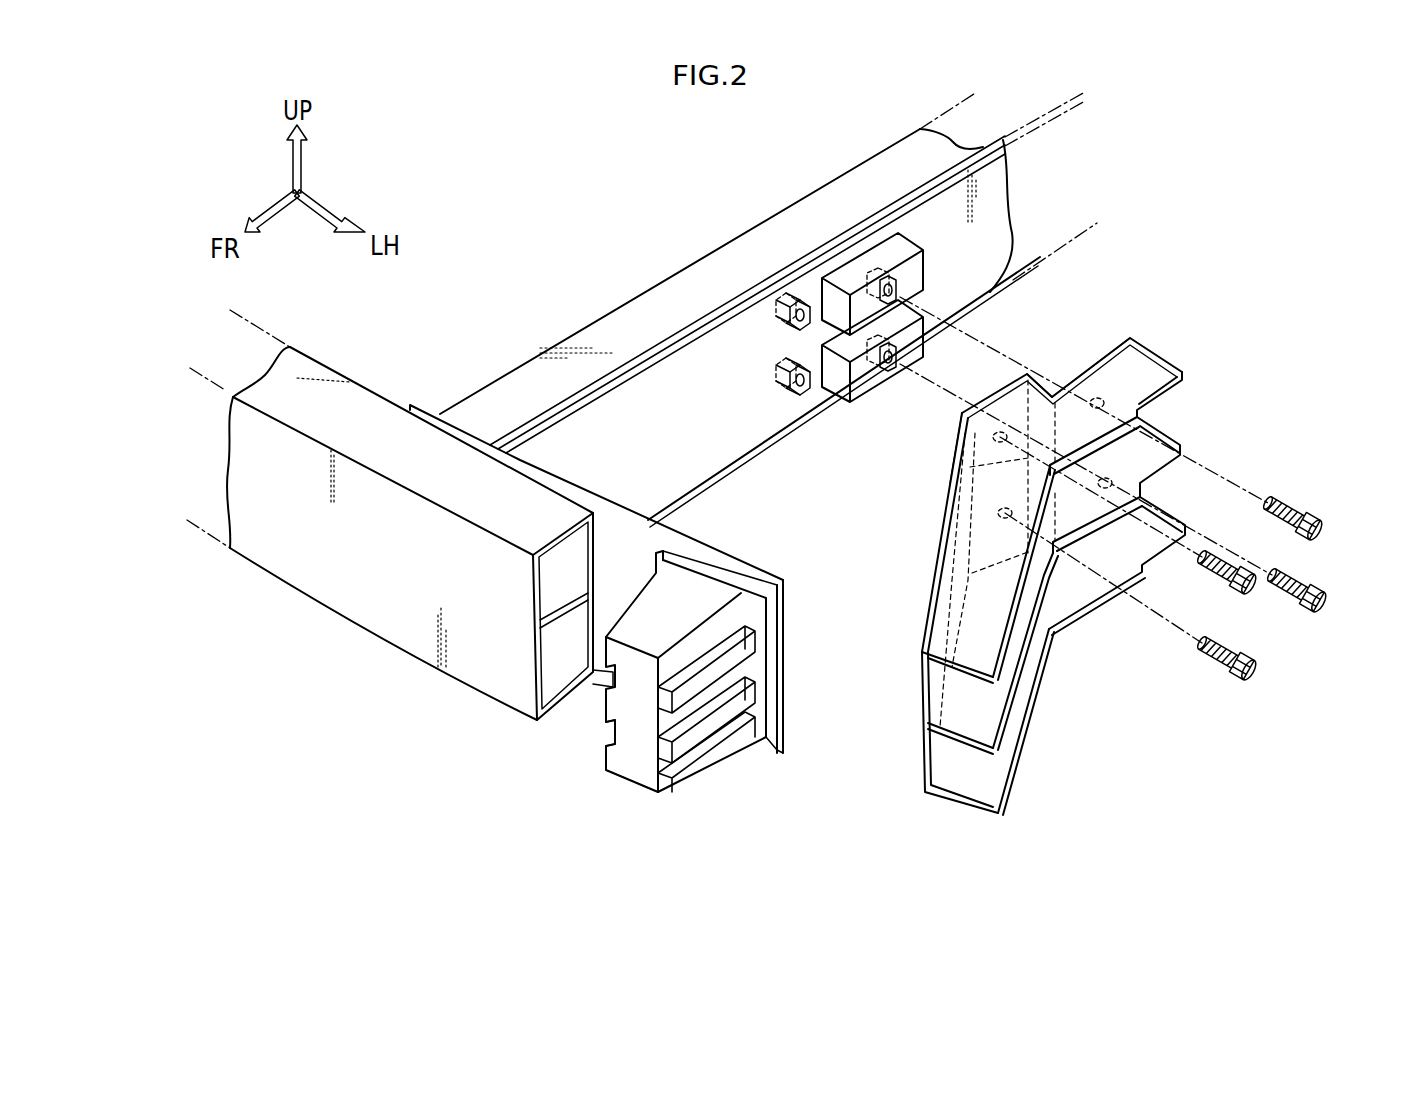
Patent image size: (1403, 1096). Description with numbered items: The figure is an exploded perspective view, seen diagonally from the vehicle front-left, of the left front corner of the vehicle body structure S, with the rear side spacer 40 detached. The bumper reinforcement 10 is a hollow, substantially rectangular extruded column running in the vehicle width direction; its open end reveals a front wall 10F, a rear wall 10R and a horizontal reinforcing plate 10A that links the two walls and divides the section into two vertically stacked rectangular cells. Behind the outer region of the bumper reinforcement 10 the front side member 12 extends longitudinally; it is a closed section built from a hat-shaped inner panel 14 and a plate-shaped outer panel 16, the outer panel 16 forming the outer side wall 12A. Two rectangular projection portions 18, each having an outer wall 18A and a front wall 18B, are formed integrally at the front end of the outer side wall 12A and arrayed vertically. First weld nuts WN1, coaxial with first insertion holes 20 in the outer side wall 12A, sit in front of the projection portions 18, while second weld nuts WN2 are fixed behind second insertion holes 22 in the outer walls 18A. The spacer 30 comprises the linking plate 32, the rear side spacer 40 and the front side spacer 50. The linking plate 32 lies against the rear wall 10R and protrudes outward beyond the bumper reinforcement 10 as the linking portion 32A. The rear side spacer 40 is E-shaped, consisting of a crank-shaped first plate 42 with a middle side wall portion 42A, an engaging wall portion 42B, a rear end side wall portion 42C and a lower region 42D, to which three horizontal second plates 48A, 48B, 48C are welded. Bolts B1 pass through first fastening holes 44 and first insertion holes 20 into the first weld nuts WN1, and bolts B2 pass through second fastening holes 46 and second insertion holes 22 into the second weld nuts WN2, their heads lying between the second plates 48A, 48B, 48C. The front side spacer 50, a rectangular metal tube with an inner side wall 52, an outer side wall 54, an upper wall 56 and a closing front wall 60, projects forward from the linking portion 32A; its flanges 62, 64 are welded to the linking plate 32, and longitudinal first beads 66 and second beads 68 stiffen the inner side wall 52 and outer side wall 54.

The bumper reinforcement 10 is at (313, 600).
The front wall 10F is at (397, 620).
The rear wall 10R is at (597, 533).
The reinforcing plate 10A is at (550, 600).
The front side member 12 is at (648, 286).
The inner panel 14 is at (912, 166).
The outer panel 16 is at (993, 176).
The outer side wall 12A is at (738, 448).
The projection portion 18 is at (897, 238).
The outer wall 18A is at (905, 278).
The front wall 18B is at (833, 297).
The first insertion hole 20 is at (790, 322).
The second insertion hole 22 is at (903, 287).
The first weld nut WN1 is at (773, 307).
The second weld nut WN2 is at (870, 282).
The spacer 30 is at (839, 570).
The linking plate 32 is at (540, 470).
The linking portion 32A is at (687, 537).
The rear side spacer 40 is at (1131, 338).
The first plate 42 is at (921, 754).
The middle side wall portion 42A is at (980, 426).
The engaging wall portion 42B is at (1040, 397).
The rear end side wall portion 42C is at (1163, 370).
The lower portion of bracket 42D is at (922, 693).
The first fastening hole 44 is at (1005, 515).
The second fastening hole 46 is at (1105, 483).
The second plate 48A is at (1160, 368).
The second plate 48B is at (1183, 450).
The second plate 48C is at (1083, 605).
The front side spacer 50 is at (657, 808).
The inner side wall 52 is at (603, 760).
The outer side wall 54 is at (697, 758).
The upper wall 56 is at (700, 587).
The front wall 60 is at (630, 768).
The flange 62 is at (650, 558).
The flange 64 is at (755, 613).
The first bead 66 is at (603, 737).
The second bead 68 is at (757, 651).
The bolt B1 is at (1247, 563).
The bolt B2 is at (1313, 515).
The vehicle body structure S is at (849, 827).